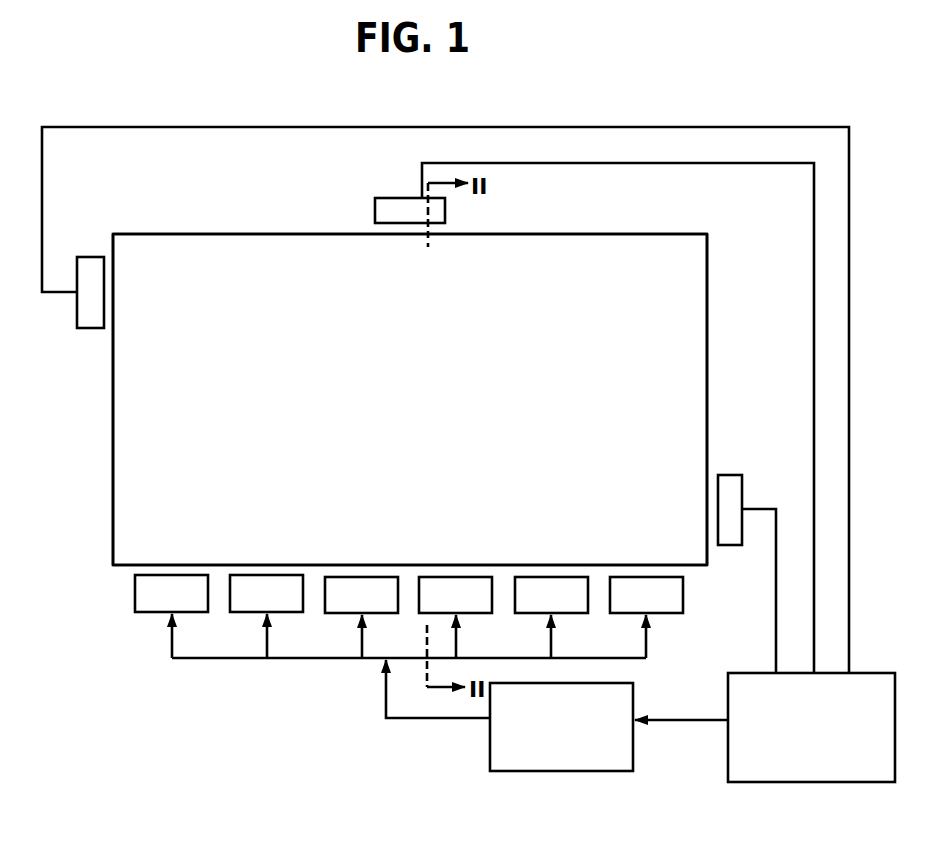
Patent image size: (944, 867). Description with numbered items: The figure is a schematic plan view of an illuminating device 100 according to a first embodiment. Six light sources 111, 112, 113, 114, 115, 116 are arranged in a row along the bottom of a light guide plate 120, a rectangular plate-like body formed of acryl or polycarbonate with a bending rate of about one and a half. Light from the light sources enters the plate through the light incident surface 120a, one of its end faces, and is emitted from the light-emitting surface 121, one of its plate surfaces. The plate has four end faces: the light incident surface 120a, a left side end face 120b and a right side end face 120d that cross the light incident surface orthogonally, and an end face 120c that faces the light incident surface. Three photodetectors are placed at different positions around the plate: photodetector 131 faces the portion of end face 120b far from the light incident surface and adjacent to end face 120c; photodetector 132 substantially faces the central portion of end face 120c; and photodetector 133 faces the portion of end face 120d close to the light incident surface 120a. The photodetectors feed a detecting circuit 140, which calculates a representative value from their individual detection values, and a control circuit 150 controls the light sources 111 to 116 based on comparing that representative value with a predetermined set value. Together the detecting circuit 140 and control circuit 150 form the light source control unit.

The illuminating device 100 is at (217, 80).
The light source 111 is at (145, 612).
The light source 112 is at (242, 612).
The light source 113 is at (337, 613).
The light source 114 is at (470, 613).
The light source 115 is at (565, 613).
The light source 116 is at (662, 613).
The light guide plate 120 is at (660, 247).
The light incident surface 120a is at (312, 566).
The end face 120b is at (113, 452).
The end face 120c is at (193, 234).
The end face 120d is at (708, 308).
The light-emitting surface 121 is at (428, 408).
The photodetector 131 is at (92, 329).
The photodetector 132 is at (375, 212).
The photodetector 133 is at (730, 475).
The detecting circuit 140 is at (800, 783).
The control circuit 150 is at (543, 772).